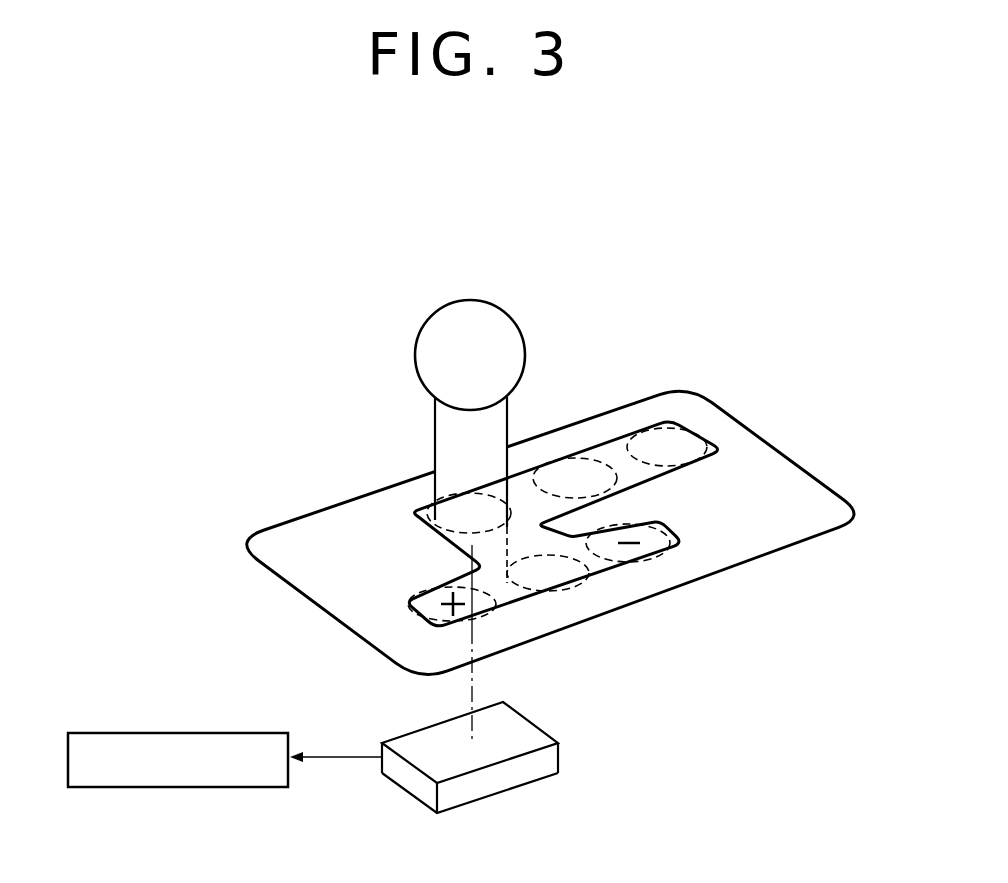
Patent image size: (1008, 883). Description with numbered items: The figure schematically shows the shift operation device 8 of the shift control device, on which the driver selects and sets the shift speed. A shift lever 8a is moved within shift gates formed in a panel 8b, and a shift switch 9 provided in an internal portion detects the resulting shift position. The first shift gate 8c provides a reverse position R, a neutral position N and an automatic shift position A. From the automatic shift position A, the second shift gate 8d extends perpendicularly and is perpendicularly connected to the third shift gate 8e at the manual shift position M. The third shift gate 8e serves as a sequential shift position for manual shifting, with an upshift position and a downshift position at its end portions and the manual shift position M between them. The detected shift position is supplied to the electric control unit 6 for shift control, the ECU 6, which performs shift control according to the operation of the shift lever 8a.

The electric control unit for shift control 6 is at (237, 733).
The shift operation device 8 is at (668, 352).
The shift lever 8a is at (483, 317).
The panel 8b is at (768, 457).
The first shift gate 8c is at (618, 457).
The second shift gate 8d is at (617, 513).
The third shift gate 8e is at (603, 572).
The shift switch 9 is at (523, 730).